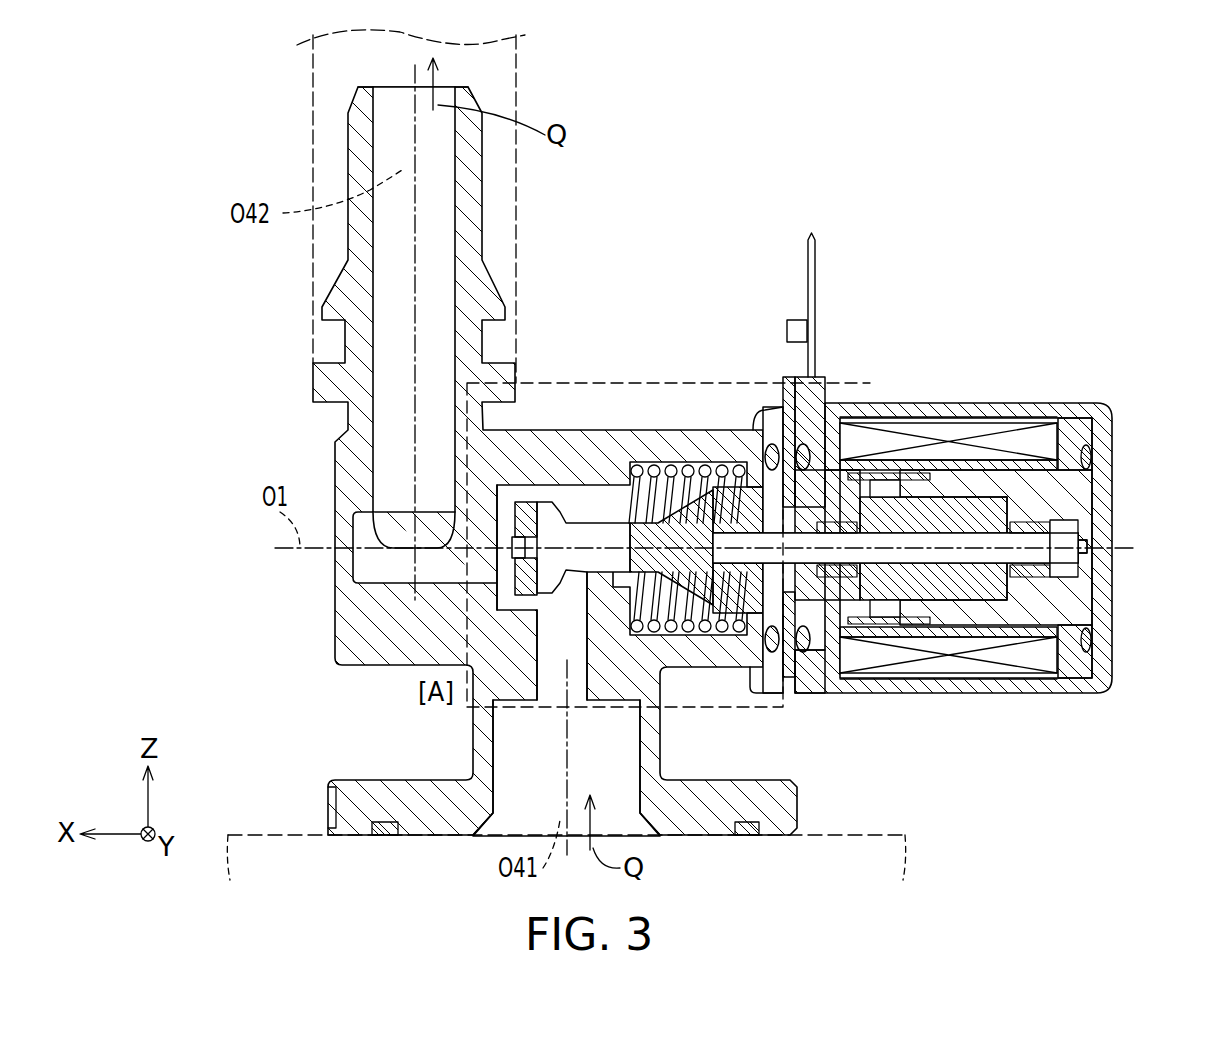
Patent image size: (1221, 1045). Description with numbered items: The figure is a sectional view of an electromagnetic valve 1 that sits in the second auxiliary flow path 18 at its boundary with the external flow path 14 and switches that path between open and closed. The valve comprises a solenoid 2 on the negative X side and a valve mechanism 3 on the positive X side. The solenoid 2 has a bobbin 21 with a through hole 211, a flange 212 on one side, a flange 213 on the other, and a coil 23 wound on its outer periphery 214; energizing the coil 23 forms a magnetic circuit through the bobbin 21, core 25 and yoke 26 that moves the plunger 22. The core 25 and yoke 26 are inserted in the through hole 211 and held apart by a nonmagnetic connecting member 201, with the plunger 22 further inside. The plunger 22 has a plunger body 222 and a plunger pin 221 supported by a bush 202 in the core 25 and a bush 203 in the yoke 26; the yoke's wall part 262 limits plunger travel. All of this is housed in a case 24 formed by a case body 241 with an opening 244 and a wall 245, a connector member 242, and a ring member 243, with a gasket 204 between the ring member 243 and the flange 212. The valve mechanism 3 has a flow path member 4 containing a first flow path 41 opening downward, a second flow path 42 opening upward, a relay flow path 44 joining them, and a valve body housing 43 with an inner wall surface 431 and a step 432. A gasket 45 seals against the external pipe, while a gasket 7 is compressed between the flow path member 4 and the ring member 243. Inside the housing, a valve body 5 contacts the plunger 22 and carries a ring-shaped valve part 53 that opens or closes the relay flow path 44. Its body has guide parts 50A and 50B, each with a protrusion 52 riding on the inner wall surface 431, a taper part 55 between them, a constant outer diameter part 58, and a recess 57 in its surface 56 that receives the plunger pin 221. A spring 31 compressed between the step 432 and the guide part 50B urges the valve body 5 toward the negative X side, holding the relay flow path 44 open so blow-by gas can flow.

The electromagnetic valve 1 is at (1132, 150).
The solenoid 2 is at (1118, 300).
The valve mechanism 3 is at (248, 357).
The flow path member 4 is at (335, 442).
The valve body 5 is at (545, 512).
The gasket 7 is at (773, 660).
The external flow path 14 is at (272, 835).
The second auxiliary flow path 18 is at (520, 75).
The bobbin 21 is at (1093, 410).
The plunger 22 is at (992, 490).
The coil 23 is at (976, 430).
The case 24 is at (1112, 406).
The core 25 is at (850, 600).
The yoke 26 is at (1005, 612).
The spring 31 is at (718, 480).
The first flow path 41 is at (533, 790).
The second flow path 42 is at (392, 98).
The valve body housing 43 is at (582, 494).
The relay flow path 44 is at (485, 525).
The gasket 45 is at (745, 836).
The guide part 50A is at (667, 460).
The guide part 50B is at (797, 440).
The protrusion 52 is at (615, 490).
The valve part 53 is at (520, 503).
The taper part 55 is at (737, 465).
The surface 56 is at (787, 690).
The recess 57 is at (730, 600).
The constant outer diameter part 58 is at (770, 450).
The connecting member 201 is at (905, 600).
The bush 202 is at (870, 605).
The bush 203 is at (1068, 620).
The gasket 204 is at (835, 470).
The through hole 211 is at (1085, 420).
The flange 212 is at (805, 650).
The flange 213 is at (1105, 690).
The outer periphery 214 is at (965, 470).
The plunger pin 221 is at (950, 610).
The plunger body 222 is at (985, 605).
The case body 241 is at (935, 410).
The connector member 242 is at (848, 447).
The ring member 243 is at (830, 400).
The opening 244 is at (745, 667).
The wall 245 is at (1100, 512).
The wall part 262 is at (1082, 578).
The inner wall surface 431 is at (755, 462).
The step 432 is at (648, 640).